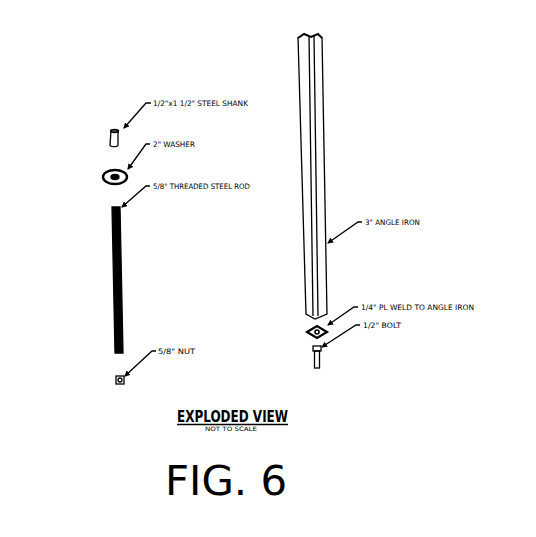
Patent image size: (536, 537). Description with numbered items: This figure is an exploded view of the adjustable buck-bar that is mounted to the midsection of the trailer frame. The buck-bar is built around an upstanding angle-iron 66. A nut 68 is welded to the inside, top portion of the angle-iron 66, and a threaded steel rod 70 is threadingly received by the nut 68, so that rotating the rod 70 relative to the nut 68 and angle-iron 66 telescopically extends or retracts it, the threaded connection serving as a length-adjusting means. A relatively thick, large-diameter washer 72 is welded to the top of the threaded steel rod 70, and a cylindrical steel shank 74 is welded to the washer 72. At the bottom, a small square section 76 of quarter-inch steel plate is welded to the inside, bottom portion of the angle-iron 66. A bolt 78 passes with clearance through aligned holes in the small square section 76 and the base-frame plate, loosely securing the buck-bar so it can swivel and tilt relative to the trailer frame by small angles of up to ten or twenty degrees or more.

The angle iron 66 is at (320, 149).
The nut 68 is at (114, 384).
The threaded steel rod 70 is at (121, 283).
The washer 72 is at (107, 182).
The steel shank 74 is at (108, 137).
The plate welded to angle iron 76 is at (307, 331).
The bolt 78 is at (320, 360).